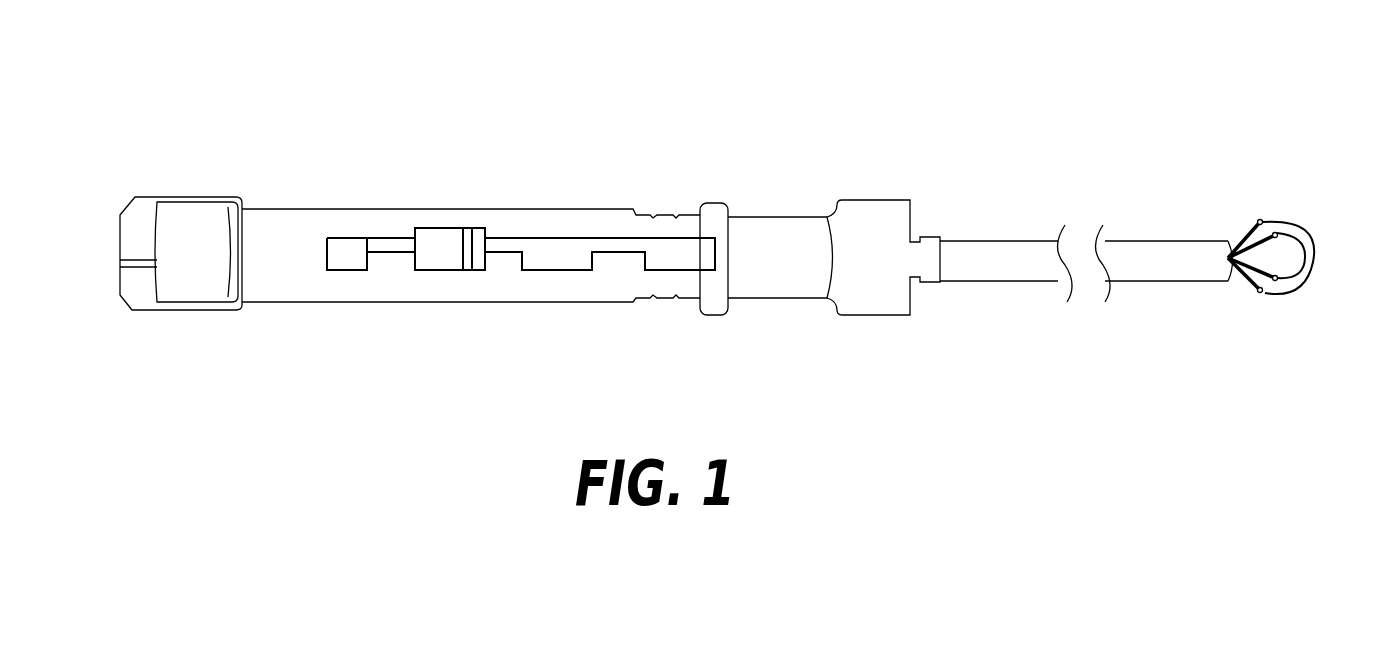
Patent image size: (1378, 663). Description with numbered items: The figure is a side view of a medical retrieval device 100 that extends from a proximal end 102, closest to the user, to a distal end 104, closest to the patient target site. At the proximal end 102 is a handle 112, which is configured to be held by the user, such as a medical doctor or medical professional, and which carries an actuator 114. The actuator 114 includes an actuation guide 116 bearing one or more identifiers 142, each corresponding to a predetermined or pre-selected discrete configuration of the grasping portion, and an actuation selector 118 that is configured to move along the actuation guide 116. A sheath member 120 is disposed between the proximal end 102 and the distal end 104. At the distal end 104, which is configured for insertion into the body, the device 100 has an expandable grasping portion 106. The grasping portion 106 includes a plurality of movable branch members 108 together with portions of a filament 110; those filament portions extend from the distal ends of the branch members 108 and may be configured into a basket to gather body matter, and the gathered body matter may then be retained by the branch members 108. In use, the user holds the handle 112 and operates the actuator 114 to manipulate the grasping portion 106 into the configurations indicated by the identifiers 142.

The medical retrieval device 100 is at (775, 147).
The proximal end 102 is at (178, 130).
The distal end 104 is at (1175, 127).
The expandable grasping portion 106 is at (1263, 213).
The movable branch members 108 is at (1248, 288).
The filament 110 is at (1293, 222).
The handle 112 is at (448, 365).
The actuator 114 is at (580, 233).
The actuation guide 116 is at (362, 247).
The actuation selector 118 is at (447, 235).
The sheath member 120 is at (1167, 283).
The identifiers 142 is at (345, 302).